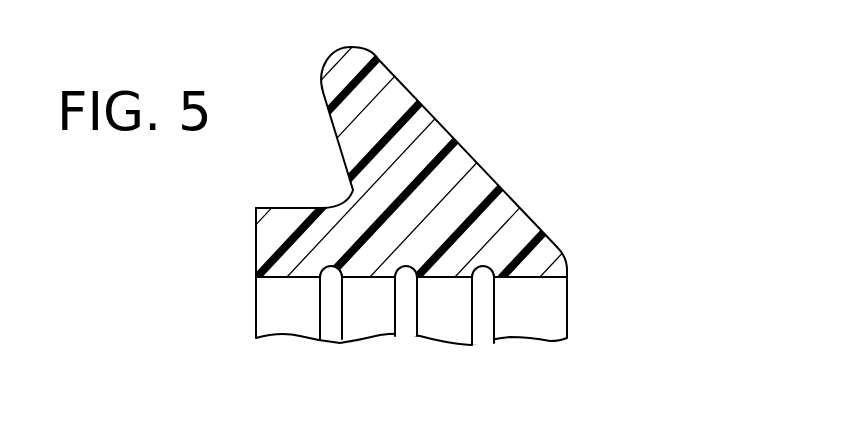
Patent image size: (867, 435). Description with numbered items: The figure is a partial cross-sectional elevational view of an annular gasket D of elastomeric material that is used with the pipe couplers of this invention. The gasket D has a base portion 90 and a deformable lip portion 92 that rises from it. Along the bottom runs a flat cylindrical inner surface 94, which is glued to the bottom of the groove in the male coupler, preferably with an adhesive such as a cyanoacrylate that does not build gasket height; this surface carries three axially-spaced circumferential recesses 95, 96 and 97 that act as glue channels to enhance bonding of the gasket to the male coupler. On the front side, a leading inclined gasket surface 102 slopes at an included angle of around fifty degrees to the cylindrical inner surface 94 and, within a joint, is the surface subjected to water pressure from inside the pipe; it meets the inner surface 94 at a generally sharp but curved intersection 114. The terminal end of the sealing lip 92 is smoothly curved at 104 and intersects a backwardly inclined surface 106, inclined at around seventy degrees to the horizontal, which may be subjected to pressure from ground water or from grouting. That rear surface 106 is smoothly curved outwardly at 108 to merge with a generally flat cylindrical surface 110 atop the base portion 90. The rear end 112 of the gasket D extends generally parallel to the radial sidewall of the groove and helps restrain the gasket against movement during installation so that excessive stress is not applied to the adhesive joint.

The base portion 90 is at (264, 254).
The deformable lip portion 92 is at (376, 82).
The cylindrical inner surface 94 is at (532, 278).
The circumferential recess 95 is at (330, 328).
The circumferential recess 96 is at (407, 322).
The circumferential recess 97 is at (483, 326).
The leading inclined gasket surface 102 is at (482, 183).
The smoothly curved terminal end 104 is at (334, 58).
The backwardly inclined surface 106 is at (340, 133).
The smoothly curved outward portion 108 is at (350, 190).
The generally flat cylindrical surface 110 is at (263, 205).
The rear end 112 is at (255, 222).
The sharp but curved intersection 114 is at (565, 262).
The annular gasket D is at (453, 128).